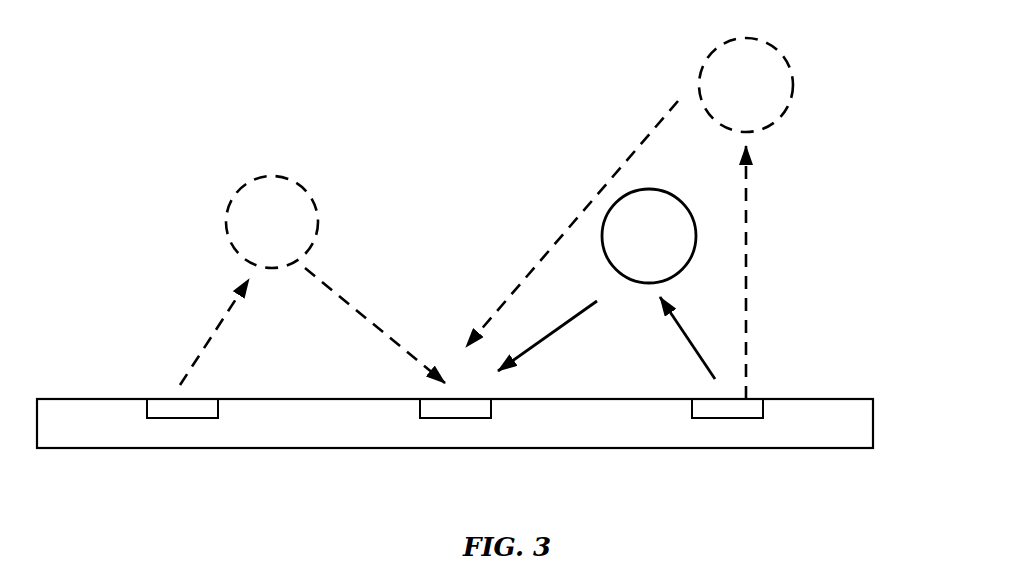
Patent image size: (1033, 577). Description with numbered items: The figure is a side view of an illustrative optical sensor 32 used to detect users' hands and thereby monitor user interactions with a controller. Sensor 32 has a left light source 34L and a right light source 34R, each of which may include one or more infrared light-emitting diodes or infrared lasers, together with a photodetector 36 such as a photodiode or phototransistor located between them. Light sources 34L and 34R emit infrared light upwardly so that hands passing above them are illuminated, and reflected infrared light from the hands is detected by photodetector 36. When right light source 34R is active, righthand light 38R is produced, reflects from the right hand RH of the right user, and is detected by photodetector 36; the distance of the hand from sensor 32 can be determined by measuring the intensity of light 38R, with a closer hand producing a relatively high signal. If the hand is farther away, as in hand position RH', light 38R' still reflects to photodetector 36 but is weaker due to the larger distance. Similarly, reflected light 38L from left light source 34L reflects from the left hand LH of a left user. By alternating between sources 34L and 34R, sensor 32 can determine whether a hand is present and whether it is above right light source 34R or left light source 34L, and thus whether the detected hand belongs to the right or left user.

The sensor 32 is at (873, 422).
The left light source 34L is at (183, 418).
The right light source 34R is at (727, 418).
The photodetector 36 is at (456, 418).
The reflected light from left light source 38L is at (393, 333).
The righthand light 38R is at (606, 338).
The light reflected from farther hand position 38R' is at (647, 250).
The left hand LH is at (318, 222).
The right hand RH is at (655, 256).
The farther hand position RH' is at (781, 85).